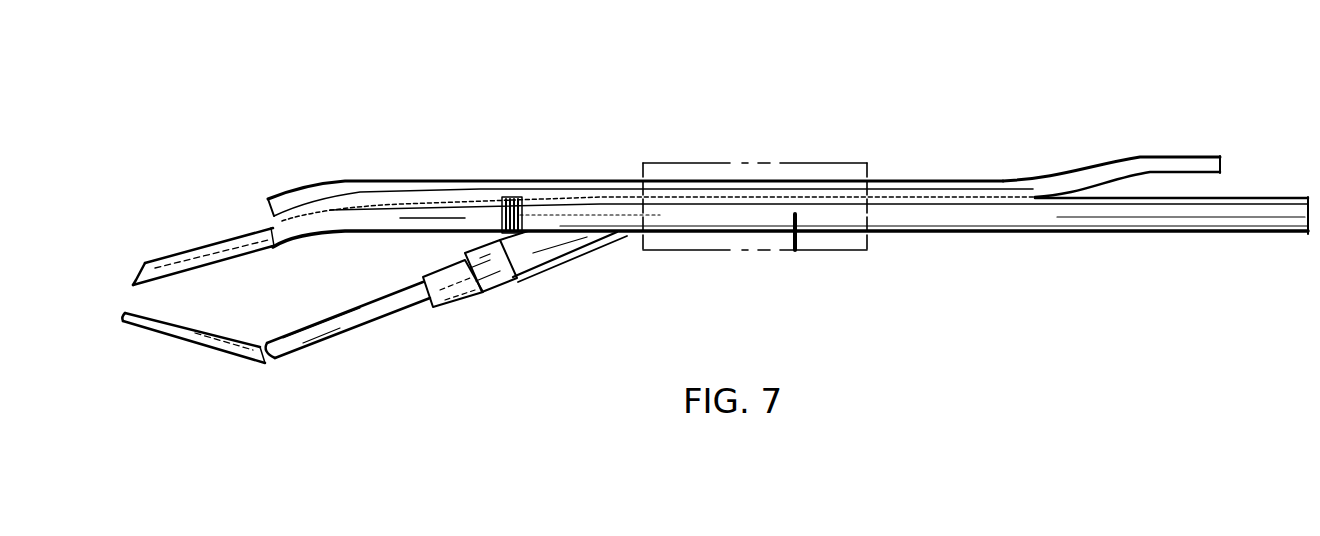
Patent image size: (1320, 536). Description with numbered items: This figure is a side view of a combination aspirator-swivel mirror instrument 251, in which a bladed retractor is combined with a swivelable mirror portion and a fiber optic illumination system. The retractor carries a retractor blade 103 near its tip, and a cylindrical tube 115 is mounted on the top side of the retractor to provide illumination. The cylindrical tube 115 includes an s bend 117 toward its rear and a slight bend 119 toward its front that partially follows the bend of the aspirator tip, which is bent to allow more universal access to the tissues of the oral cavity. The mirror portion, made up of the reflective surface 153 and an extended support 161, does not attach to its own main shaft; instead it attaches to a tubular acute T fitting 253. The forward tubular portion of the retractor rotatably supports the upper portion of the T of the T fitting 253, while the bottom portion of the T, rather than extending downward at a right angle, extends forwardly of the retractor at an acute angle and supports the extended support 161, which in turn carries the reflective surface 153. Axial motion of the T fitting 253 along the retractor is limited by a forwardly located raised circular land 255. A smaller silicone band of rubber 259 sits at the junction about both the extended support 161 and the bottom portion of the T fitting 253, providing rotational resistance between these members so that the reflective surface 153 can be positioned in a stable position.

The retractor blade 103 is at (258, 251).
The reflective surface 153 is at (172, 323).
The extended support 161 is at (343, 328).
The silicone band of rubber 259 is at (458, 306).
The tubular acute T fitting 253 is at (492, 197).
The combination aspirator-swivel mirror instrument 251 is at (707, 137).
The forwardly located raised circular land 255 is at (797, 243).
The slight bend 119 is at (303, 207).
The cylindrical tube 115 is at (972, 181).
The s bend 117 is at (1078, 169).